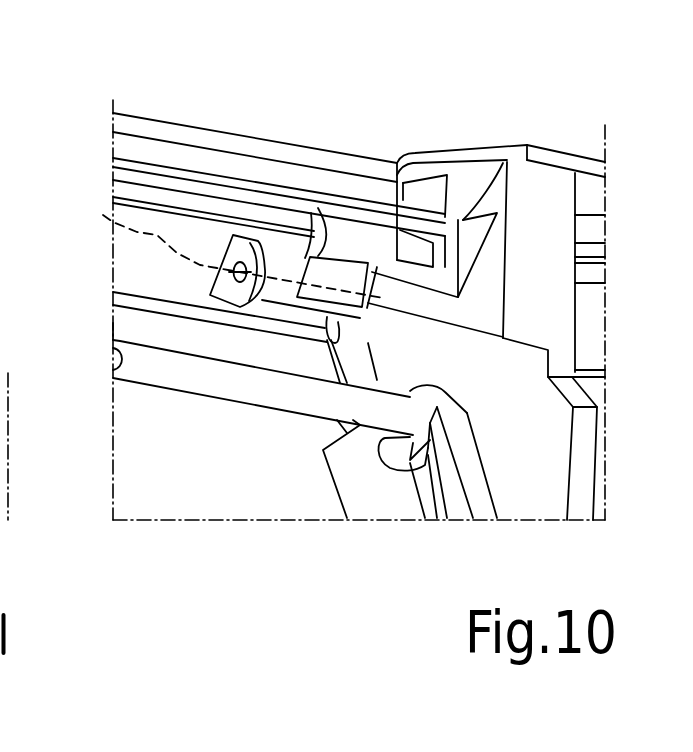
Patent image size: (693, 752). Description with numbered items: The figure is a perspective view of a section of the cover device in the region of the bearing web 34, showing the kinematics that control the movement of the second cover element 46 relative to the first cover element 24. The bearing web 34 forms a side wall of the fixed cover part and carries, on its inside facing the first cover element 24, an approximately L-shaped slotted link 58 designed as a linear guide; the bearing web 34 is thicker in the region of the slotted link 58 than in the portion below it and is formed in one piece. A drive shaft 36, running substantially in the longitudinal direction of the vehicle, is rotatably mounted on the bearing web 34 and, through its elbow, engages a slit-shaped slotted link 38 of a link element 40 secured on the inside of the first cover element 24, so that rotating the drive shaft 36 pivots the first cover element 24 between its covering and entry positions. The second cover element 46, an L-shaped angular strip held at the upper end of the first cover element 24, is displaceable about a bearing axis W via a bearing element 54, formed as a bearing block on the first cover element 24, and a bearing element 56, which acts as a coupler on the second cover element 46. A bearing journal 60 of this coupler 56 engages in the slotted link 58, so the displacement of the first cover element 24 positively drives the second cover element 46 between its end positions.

The second cover element 46 is at (152, 152).
The bearing element 54 is at (273, 270).
The bearing element 56 is at (312, 228).
The bearing journal 60 is at (400, 258).
The slotted link 58 is at (507, 165).
The bearing web 34 is at (540, 428).
The first cover element 24 is at (158, 283).
The drive shaft 36 is at (273, 395).
The slotted link 38 is at (437, 507).
The link element 40 is at (373, 498).
The bearing axis W is at (224, 240).